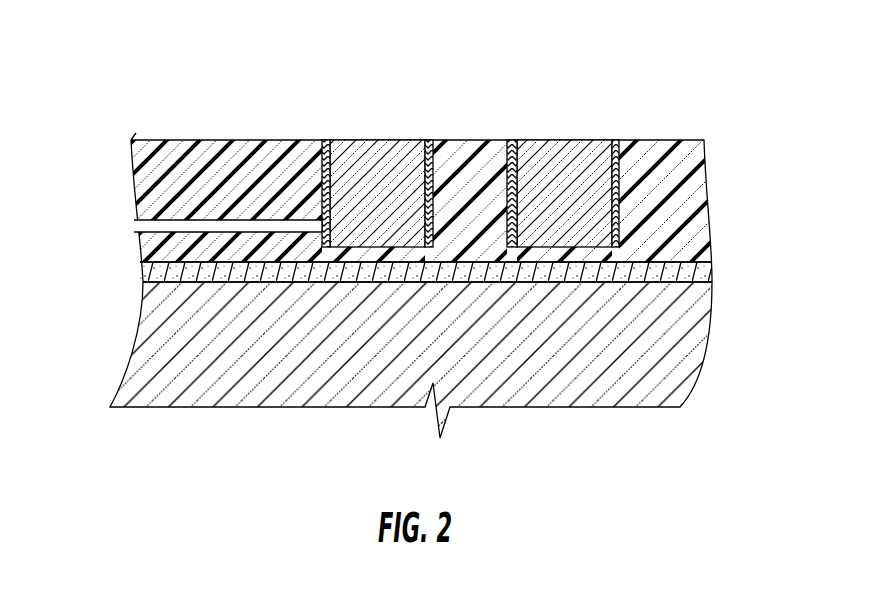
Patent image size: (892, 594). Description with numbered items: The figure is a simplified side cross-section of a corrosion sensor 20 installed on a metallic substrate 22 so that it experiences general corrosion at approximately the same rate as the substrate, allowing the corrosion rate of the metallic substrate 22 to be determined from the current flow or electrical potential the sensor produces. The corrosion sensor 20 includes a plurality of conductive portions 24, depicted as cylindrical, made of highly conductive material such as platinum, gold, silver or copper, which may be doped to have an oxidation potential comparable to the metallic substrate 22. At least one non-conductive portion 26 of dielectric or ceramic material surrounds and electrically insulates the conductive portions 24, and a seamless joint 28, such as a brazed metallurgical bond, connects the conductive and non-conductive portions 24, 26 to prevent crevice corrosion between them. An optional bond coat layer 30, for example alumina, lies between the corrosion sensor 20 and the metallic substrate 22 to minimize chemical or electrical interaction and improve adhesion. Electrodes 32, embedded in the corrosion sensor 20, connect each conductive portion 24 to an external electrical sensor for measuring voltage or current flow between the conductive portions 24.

The corrosion sensor 20 is at (670, 88).
The metallic substrate 22 is at (140, 334).
The conductive portions 24 is at (356, 140).
The non-conductive portion 26 is at (462, 140).
The seamless joint 28 is at (325, 140).
The bond coat layer 30 is at (143, 272).
The electrodes 32 is at (218, 220).